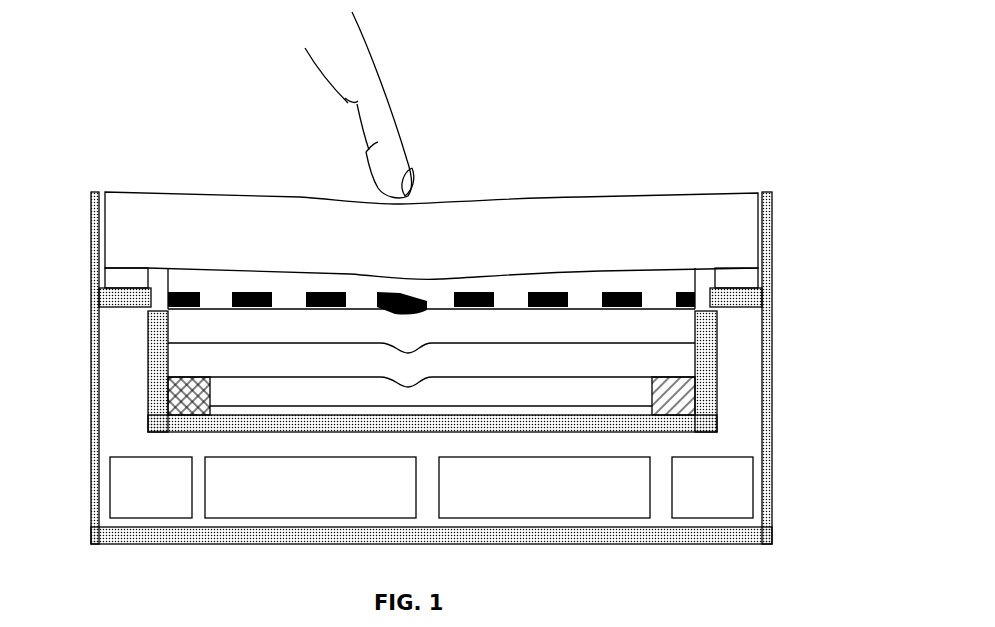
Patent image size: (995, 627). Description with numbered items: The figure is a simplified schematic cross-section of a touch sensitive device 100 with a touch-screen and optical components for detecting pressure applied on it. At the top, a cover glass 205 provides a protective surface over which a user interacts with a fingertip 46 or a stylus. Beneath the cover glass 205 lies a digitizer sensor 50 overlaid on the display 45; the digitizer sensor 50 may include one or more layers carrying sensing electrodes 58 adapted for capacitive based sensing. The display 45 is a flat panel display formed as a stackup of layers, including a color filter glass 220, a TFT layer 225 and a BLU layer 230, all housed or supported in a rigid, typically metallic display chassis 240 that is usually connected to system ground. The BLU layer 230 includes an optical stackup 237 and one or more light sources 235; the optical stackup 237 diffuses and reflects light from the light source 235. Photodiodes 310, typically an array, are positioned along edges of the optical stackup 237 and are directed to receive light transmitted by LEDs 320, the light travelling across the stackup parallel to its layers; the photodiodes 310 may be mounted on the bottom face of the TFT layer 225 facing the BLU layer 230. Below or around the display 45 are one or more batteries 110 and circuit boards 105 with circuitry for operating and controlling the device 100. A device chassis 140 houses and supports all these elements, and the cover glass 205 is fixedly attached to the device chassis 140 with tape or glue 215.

The touch sensitive device 100 is at (225, 160).
The fingertip 46 is at (395, 132).
The digitizer sensor 50 is at (258, 282).
The sensing electrodes 58 is at (558, 292).
The cover glass 205 is at (698, 203).
The tape or glue 215 is at (725, 275).
The display 45 is at (740, 326).
The color filter glass 220 is at (200, 328).
The TFT layer 225 is at (205, 370).
The LEDs 320 is at (207, 407).
The BLU layer 230 is at (195, 412).
The display chassis 240 is at (708, 345).
The photodiodes 310 is at (680, 392).
The light source 235 is at (633, 410).
The optical stackup 237 is at (555, 395).
The circuit boards 105 is at (137, 483).
The device chassis 140 is at (182, 536).
The batteries 110 is at (295, 503).